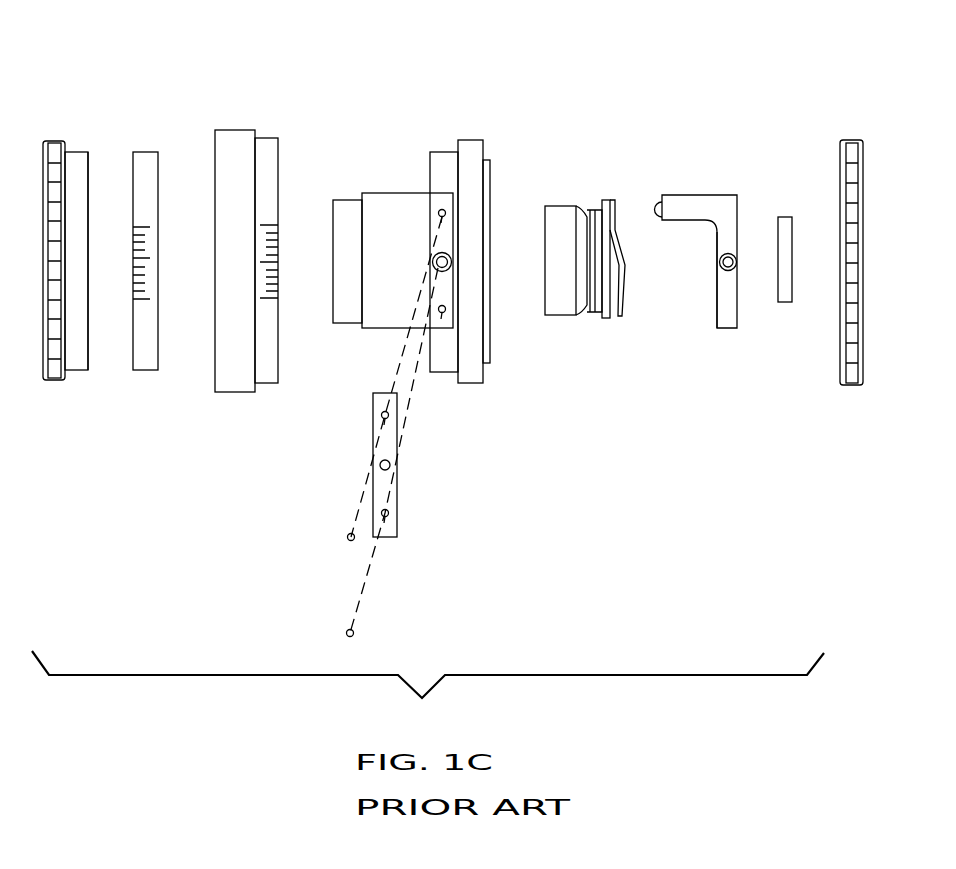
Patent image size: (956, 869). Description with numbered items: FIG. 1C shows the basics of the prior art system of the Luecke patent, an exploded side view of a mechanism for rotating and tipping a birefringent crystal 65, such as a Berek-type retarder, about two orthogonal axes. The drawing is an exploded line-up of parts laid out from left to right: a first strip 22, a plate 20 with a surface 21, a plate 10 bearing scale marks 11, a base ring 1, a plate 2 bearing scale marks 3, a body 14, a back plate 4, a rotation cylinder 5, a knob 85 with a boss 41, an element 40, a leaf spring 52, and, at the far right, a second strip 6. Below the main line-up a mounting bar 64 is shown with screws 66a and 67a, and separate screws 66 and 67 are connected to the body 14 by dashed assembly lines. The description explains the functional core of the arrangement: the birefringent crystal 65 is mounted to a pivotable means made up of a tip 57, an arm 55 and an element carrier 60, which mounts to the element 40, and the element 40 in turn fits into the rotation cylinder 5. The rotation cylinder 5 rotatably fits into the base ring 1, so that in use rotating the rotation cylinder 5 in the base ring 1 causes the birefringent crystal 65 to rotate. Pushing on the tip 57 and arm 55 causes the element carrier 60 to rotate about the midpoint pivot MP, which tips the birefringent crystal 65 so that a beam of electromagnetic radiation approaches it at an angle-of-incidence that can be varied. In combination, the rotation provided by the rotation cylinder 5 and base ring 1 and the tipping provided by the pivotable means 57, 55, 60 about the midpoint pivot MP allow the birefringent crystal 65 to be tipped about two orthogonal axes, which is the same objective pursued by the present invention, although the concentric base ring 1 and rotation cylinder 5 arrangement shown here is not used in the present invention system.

The battery strip 22 is at (52, 140).
The plate 20 is at (75, 152).
The plate surface 21 is at (88, 222).
The plate 10 is at (148, 150).
The scale marks 11 is at (140, 224).
The base ring 1 is at (237, 130).
The plate 2 is at (268, 138).
The scale marks 3 is at (270, 225).
The body 14 is at (348, 200).
The back plate 4 is at (459, 386).
The rotation cylinder 5 is at (471, 140).
The knob 85 is at (555, 205).
The boss 41 is at (583, 315).
The element 40 is at (608, 193).
The leaf spring 52 is at (617, 215).
The pivotable means 55 is at (688, 192).
The pivotable means 57 is at (650, 218).
The midpoint pivot MP is at (718, 262).
The element carrier 60 is at (716, 296).
The birefringent crystal 65 is at (780, 215).
The battery strip 6 is at (848, 140).
The mounting bar 64 is at (400, 515).
The screw 66a is at (380, 418).
The screw 67a is at (388, 519).
The screw 66 is at (347, 540).
The screw 67 is at (345, 636).